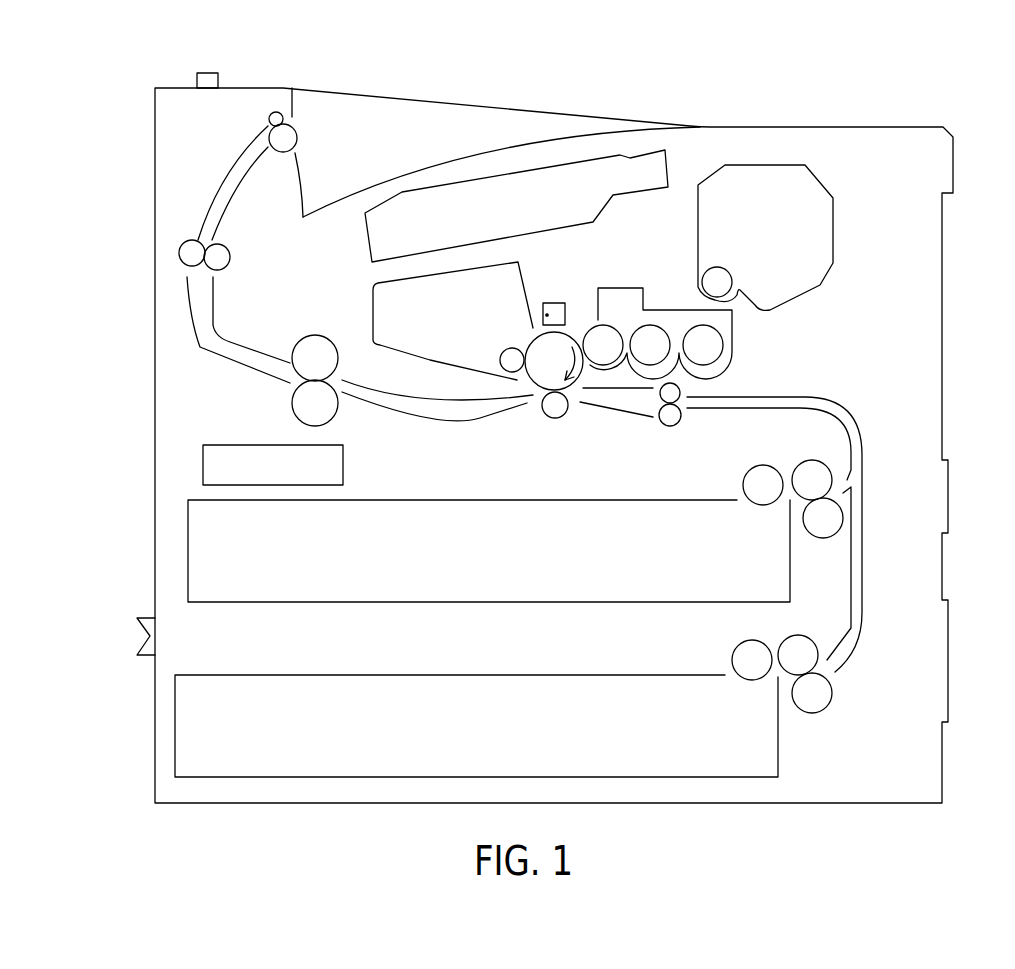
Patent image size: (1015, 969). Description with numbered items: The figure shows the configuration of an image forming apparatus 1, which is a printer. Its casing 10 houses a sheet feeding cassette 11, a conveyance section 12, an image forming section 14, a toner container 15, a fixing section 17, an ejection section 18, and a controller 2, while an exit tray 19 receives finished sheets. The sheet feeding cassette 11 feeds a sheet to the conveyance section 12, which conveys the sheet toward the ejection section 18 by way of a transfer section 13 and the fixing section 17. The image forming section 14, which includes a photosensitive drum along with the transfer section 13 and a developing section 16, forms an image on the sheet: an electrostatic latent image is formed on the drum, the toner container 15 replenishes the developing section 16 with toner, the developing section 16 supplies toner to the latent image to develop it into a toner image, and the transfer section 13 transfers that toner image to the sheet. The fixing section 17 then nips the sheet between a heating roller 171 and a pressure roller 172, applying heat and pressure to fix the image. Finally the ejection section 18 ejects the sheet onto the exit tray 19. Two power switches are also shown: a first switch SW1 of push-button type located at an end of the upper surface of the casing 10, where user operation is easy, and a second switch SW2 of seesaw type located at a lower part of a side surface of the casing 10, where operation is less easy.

The image forming apparatus 1 is at (925, 101).
The controller 2 is at (203, 463).
The casing 10 is at (155, 569).
The sheet feeding cassette 11 is at (432, 500).
The conveyance section 12 is at (215, 332).
The transfer section 13 is at (555, 418).
The image forming section 14 is at (580, 298).
The toner container 15 is at (775, 165).
The developing section 16 is at (735, 340).
The fixing section 17 is at (347, 351).
The heating roller 171 is at (327, 360).
The pressure roller 172 is at (327, 413).
The ejection section 18 is at (298, 138).
The exit tray 19 is at (447, 153).
The first switch SW1 is at (210, 73).
The second switch SW2 is at (137, 633).